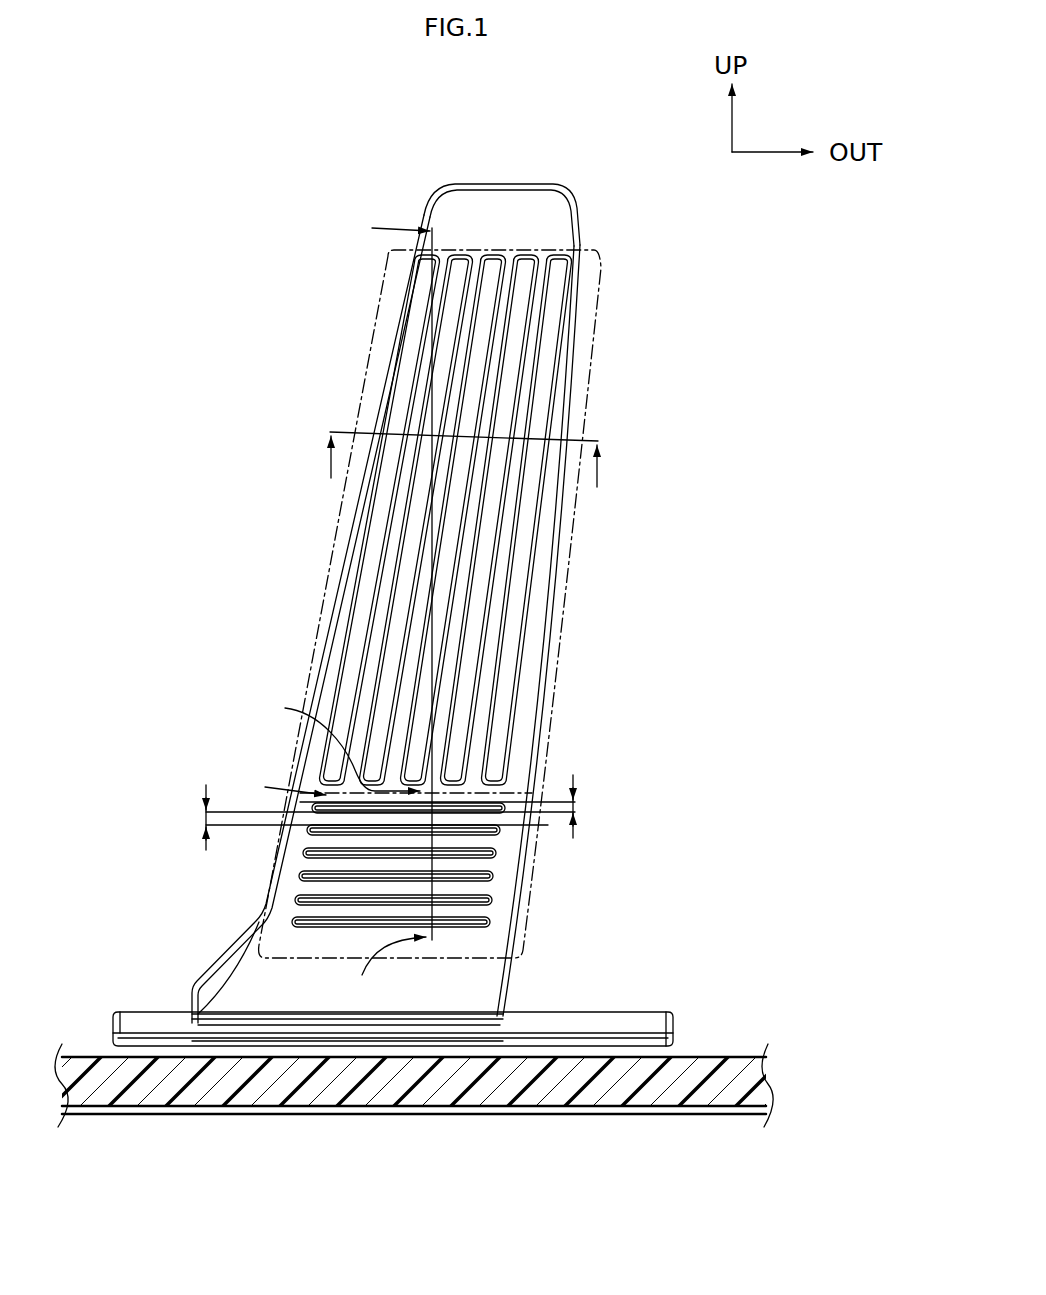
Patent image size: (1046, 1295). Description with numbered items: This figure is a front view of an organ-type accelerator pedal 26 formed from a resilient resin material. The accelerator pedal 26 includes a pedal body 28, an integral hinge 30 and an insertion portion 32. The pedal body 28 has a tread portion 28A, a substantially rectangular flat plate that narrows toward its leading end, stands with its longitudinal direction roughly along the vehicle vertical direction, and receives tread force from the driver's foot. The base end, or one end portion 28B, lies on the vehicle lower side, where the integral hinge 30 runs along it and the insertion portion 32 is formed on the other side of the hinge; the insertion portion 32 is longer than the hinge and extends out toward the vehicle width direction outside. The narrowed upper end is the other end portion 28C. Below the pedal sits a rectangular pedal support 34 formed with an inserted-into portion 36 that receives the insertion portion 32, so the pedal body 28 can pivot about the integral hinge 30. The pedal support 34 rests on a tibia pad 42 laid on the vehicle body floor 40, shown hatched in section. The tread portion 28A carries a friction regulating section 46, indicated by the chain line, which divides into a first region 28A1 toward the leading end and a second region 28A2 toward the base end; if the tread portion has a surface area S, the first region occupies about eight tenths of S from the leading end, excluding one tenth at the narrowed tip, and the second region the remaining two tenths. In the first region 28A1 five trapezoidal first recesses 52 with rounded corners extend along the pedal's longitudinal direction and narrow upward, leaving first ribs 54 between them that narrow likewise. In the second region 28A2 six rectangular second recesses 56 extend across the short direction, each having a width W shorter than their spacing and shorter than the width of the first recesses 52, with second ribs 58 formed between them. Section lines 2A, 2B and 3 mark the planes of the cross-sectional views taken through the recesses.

The accelerator pedal 26 is at (554, 146).
The pedal body 28 is at (461, 177).
The tread portion 28A is at (548, 213).
The first region 28A1 is at (572, 543).
The second region 28A2 is at (527, 871).
The one end portion 28B is at (472, 998).
The other end portion 28C is at (458, 219).
The integral hinge 30 is at (192, 1020).
The insertion portion 32 is at (413, 1040).
The pedal support 34 is at (125, 1028).
The inserted-into portion 36 is at (603, 1040).
The vehicle body floor 40 is at (95, 1112).
The tibia pad 42 is at (300, 1095).
The friction regulating section 46 is at (623, 282).
The first recesses 52 is at (493, 490).
The first ribs 54 is at (460, 592).
The second recesses 56 is at (458, 834).
The second ribs 58 is at (383, 842).
The surface area S is at (566, 371).
The width W is at (575, 811).
The section line 2A is at (380, 507).
The section line 2B is at (458, 474).
The section line 3 is at (345, 616).